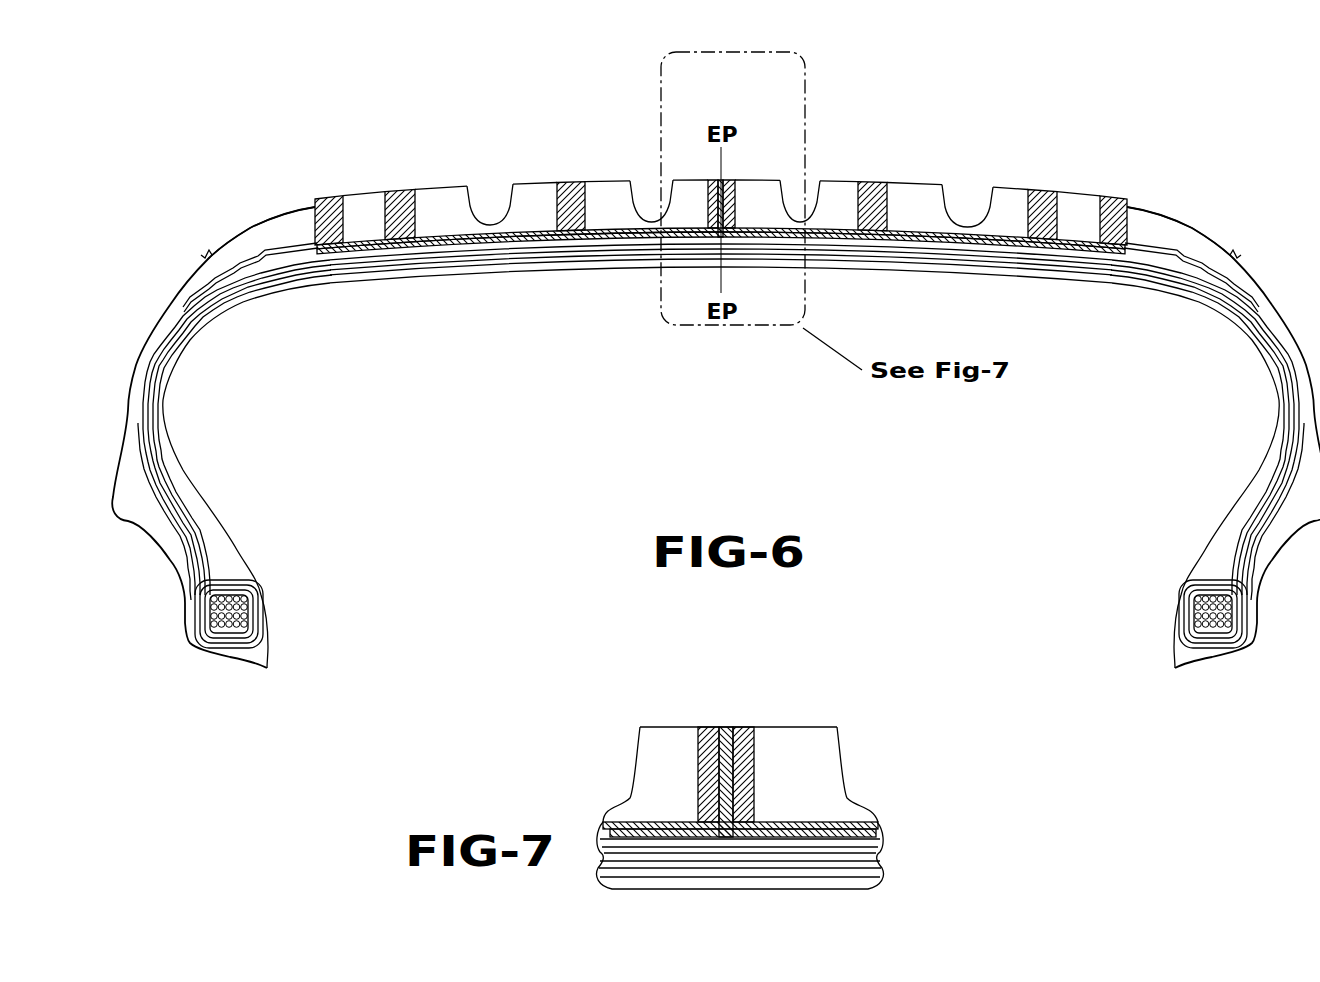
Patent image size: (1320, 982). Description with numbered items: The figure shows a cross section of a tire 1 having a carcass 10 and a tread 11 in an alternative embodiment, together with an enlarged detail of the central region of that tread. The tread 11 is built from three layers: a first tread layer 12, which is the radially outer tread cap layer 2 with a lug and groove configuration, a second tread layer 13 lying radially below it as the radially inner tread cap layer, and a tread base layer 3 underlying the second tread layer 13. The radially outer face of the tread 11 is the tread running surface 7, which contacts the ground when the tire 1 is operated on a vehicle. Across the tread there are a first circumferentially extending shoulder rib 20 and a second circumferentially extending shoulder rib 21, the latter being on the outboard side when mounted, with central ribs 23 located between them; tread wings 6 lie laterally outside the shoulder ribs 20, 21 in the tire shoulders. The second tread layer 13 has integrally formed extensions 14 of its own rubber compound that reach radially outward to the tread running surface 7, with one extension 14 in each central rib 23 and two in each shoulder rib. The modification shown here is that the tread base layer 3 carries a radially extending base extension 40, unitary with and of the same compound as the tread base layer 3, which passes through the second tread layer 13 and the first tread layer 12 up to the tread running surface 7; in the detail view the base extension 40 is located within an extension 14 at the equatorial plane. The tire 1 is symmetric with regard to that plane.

In FIG. 6, the tire 1 is at (176, 130).
In FIG. 6, the tread cap layer 2 is at (932, 183).
In FIG. 6, the tread base layer 3 is at (656, 226).
In FIG. 7, the tread base layer 3 is at (650, 818).
In FIG. 6, the tread wings 6 is at (170, 316).
In FIG. 6, the tread running surface 7 is at (834, 178).
In FIG. 6, the carcass 10 is at (1290, 393).
In FIG. 6, the tread 11 is at (1011, 182).
In FIG. 6, the first tread layer 12 is at (235, 250).
In FIG. 7, the first tread layer 12 is at (662, 765).
In FIG. 6, the second tread layer 13 is at (355, 247).
In FIG. 7, the second tread layer 13 is at (810, 823).
In FIG. 6, the extensions 14 is at (325, 205).
In FIG. 7, the extensions 14 is at (700, 750).
In FIG. 6, the first shoulder rib 20 is at (259, 208).
In FIG. 6, the second shoulder rib 21 is at (1188, 205).
In FIG. 6, the central ribs 23 is at (601, 166).
In FIG. 6, the base extension 40 is at (725, 209).
In FIG. 7, the base extension 40 is at (727, 737).